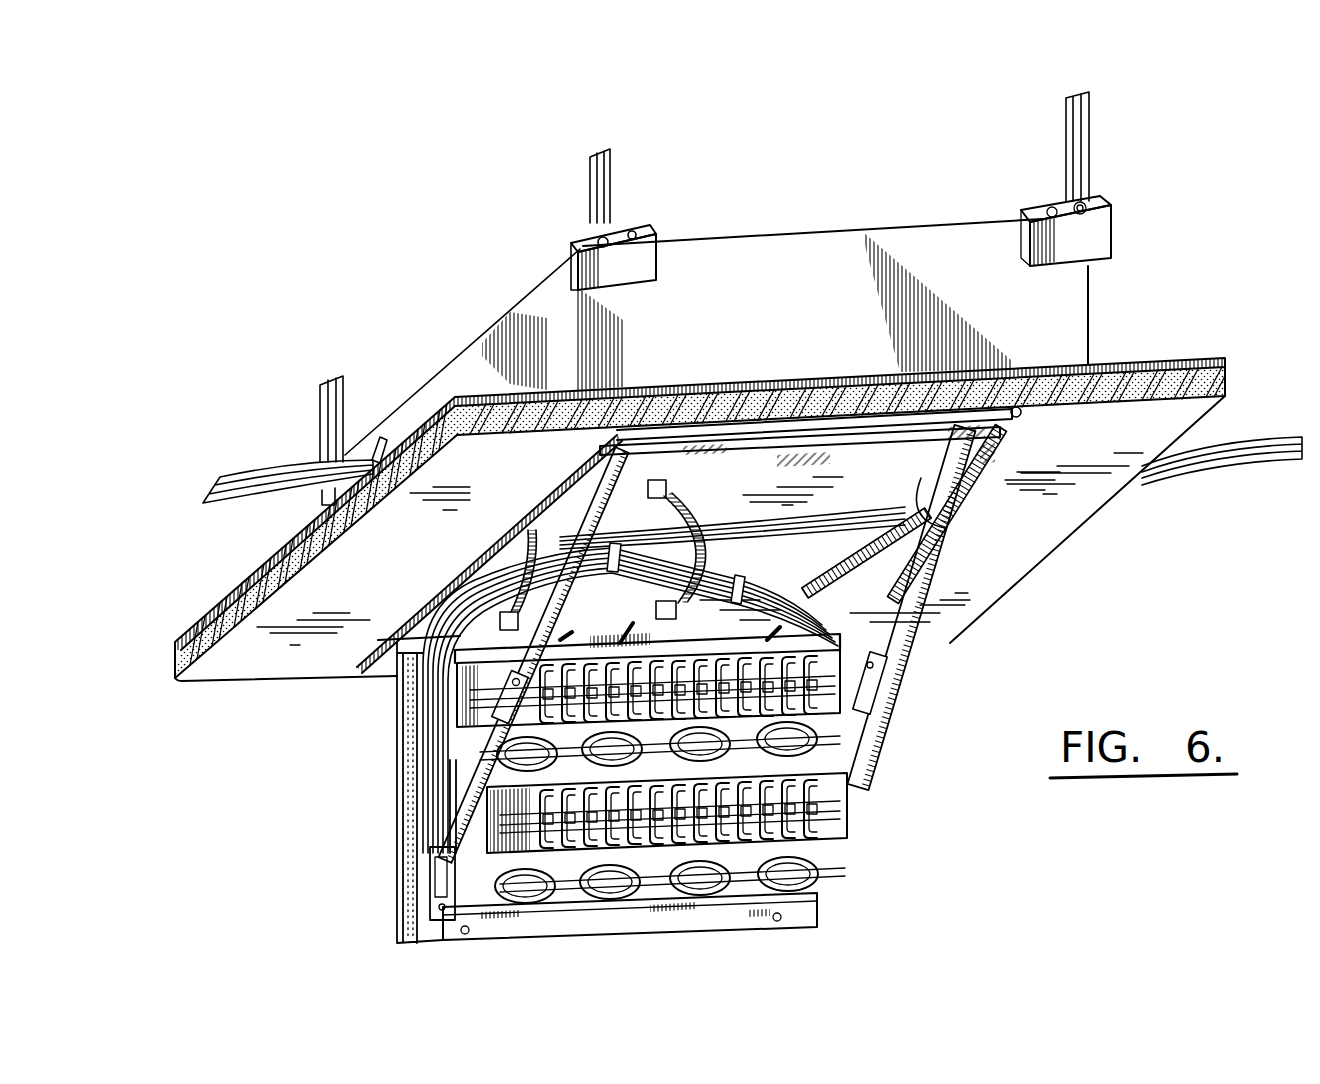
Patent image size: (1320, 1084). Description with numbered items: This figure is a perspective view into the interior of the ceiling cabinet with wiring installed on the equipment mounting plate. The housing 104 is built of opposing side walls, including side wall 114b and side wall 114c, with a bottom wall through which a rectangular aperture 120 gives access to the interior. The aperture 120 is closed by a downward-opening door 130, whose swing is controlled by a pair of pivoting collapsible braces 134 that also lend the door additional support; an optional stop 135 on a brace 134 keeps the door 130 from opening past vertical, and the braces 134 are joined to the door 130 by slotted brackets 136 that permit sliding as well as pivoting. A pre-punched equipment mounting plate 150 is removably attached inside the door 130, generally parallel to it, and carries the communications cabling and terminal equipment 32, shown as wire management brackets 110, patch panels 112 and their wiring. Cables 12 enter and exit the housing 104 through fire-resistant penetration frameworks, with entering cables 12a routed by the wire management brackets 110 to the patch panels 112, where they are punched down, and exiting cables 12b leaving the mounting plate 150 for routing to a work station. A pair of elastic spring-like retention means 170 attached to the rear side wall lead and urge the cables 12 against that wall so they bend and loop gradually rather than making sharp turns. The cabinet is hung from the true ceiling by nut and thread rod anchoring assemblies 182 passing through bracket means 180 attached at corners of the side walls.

The cables 12 is at (284, 458).
The entering cables 12a is at (462, 600).
The exiting cables 12b is at (240, 492).
The communications cabling and terminal equipment 32 is at (863, 827).
The housing 104 is at (1057, 316).
The wire management brackets 110 is at (453, 755).
The patch panels 112 is at (838, 676).
The side wall 114b is at (497, 363).
The side wall 114c is at (846, 336).
The aperture 120 is at (918, 502).
The door 130 is at (443, 850).
The pivoting collapsible braces 134 is at (892, 605).
The stop 135 is at (500, 700).
The slotted brackets 136 is at (822, 922).
The equipment mounting plate 150 is at (467, 773).
The elastic spring-like retention means 170 is at (700, 514).
The bracket means 180 is at (1086, 246).
The nut and thread rod anchoring assemblies 182 is at (1089, 172).